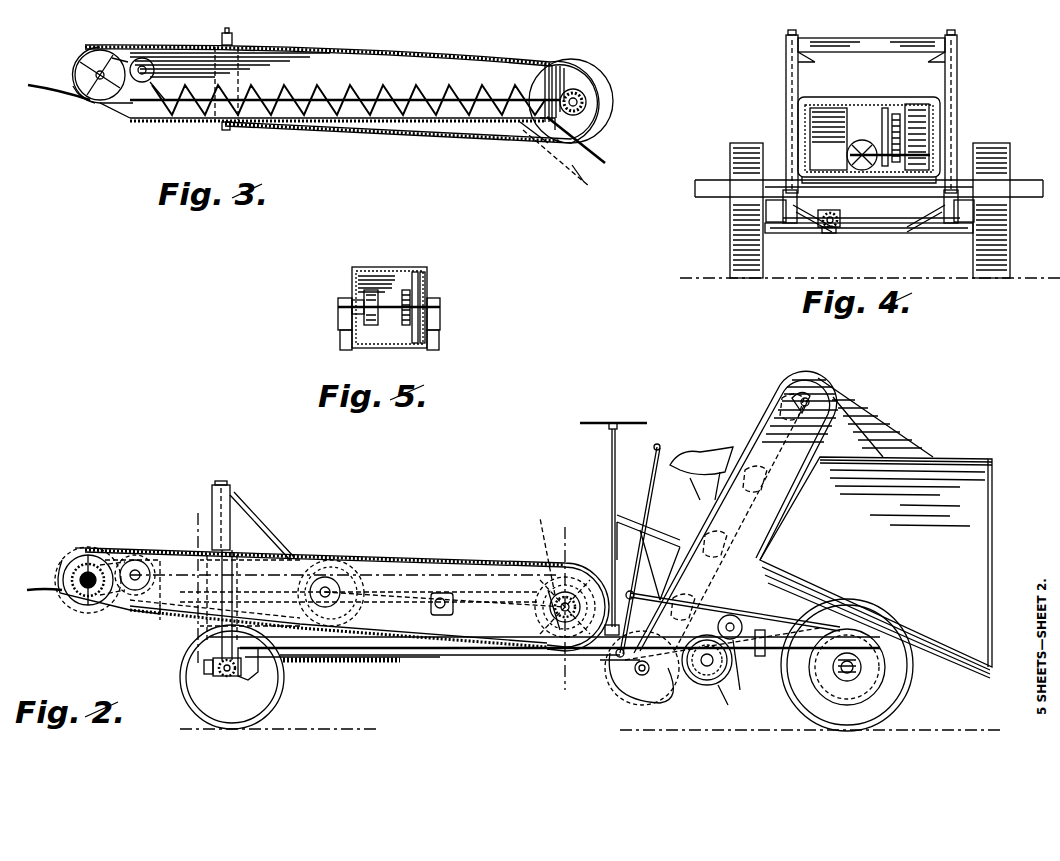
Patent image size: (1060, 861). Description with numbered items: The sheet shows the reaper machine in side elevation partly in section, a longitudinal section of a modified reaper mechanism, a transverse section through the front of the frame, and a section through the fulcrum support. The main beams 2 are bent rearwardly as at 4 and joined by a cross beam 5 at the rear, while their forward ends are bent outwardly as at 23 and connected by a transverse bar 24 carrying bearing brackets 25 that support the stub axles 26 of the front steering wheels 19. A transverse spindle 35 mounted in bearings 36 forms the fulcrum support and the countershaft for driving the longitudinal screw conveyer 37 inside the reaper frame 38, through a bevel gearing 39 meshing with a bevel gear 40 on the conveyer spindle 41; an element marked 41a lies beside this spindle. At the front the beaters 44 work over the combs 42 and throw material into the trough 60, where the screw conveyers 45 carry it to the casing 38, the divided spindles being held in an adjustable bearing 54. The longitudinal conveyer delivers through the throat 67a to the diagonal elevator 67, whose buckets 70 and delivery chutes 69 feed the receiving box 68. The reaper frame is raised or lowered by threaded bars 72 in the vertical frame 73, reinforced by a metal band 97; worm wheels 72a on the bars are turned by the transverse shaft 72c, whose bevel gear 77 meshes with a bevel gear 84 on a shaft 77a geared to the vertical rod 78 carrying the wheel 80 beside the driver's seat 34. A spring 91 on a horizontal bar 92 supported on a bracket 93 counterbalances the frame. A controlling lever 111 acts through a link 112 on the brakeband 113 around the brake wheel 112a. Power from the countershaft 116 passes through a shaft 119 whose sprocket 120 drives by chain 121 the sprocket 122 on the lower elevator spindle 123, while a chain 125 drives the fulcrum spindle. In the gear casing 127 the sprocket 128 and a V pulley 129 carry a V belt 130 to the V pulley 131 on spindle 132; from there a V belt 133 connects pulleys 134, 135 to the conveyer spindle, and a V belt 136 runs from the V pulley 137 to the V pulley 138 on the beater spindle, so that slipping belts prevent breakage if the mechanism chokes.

In FIG. 5, the main beams 2 is at (340, 350).
In FIG. 4, the main beams 2 is at (790, 195).
In FIG. 2, the rearwardly bent portion of main beams 4 is at (172, 590).
In FIG. 2, the cross beam 5 is at (576, 606).
In FIG. 4, the front steering wheels 19 is at (730, 250).
In FIG. 2, the front steering wheels 19 is at (283, 675).
In FIG. 4, the outwardly bent forward ends of frame members 23 is at (788, 225).
In FIG. 4, the transverse bar 24 is at (905, 234).
In FIG. 4, the bearing brackets 25 is at (955, 225).
In FIG. 4, the stub axles 26 is at (766, 213).
In FIG. 2, the driver's seat 34 is at (701, 464).
In FIG. 3, the transverse spindle 35 is at (590, 102).
In FIG. 5, the transverse spindle 35 is at (440, 305).
In FIG. 2, the transverse spindle 35 is at (558, 620).
In FIG. 5, the bearings 36 is at (340, 322).
In FIG. 3, the longitudinal screw conveyer 37 is at (410, 120).
In FIG. 4, the longitudinal screw conveyer 37 is at (805, 140).
In FIG. 2, the longitudinal screw conveyer 37 is at (478, 568).
In FIG. 3, the reaper frame 38 is at (468, 58).
In FIG. 5, the reaper frame 38 is at (378, 268).
In FIG. 4, the reaper frame 38 is at (880, 100).
In FIG. 2, the reaper frame 38 is at (410, 562).
In FIG. 3, the bevel gearing 39 is at (585, 90).
In FIG. 5, the bevel gearing 39 is at (352, 290).
In FIG. 2, the bevel gearing 39 is at (575, 580).
In FIG. 3, the bevel gear 40 is at (552, 125).
In FIG. 2, the bevel gear 40 is at (548, 590).
In FIG. 3, the conveyer spindle 41 is at (335, 122).
In FIG. 2, the auger casing 41a is at (140, 614).
In FIG. 3, the combs 42 is at (50, 95).
In FIG. 2, the combs 42 is at (60, 592).
In FIG. 3, the beaters 44 is at (80, 98).
In FIG. 3, the screw conveyers 45 is at (110, 105).
In FIG. 2, the adjustable bearing 54 is at (86, 590).
In FIG. 3, the trough 60 is at (146, 60).
In FIG. 2, the trough 60 is at (137, 558).
In FIG. 2, the elevator 67 is at (768, 420).
In FIG. 3, the throat 67a is at (556, 169).
In FIG. 2, the throat 67a is at (620, 660).
In FIG. 2, the receiving box 68 is at (876, 567).
In FIG. 2, the delivery chutes 69 is at (880, 430).
In FIG. 2, the buckets 70 is at (700, 515).
In FIG. 4, the threaded bar 72 is at (786, 85).
In FIG. 2, the threaded bar 72 is at (235, 545).
In FIG. 4, the worm wheels 72a is at (820, 228).
In FIG. 2, the worm wheels 72a is at (206, 668).
In FIG. 4, the transverse shaft 72c is at (868, 227).
In FIG. 2, the transverse shaft 72c is at (229, 677).
In FIG. 4, the vertical frame 73 is at (800, 84).
In FIG. 2, the vertical frame 73 is at (240, 512).
In FIG. 4, the bevel gear 77 is at (830, 225).
In FIG. 2, the shaft 77a is at (470, 656).
In FIG. 2, the vertical rod 78 is at (611, 478).
In FIG. 2, the wheel 80 is at (605, 422).
In FIG. 4, the bevel gear 84 is at (838, 220).
In FIG. 2, the spring 91 is at (345, 662).
In FIG. 2, the horizontal bar 92 is at (253, 678).
In FIG. 2, the bracket 93 is at (380, 664).
In FIG. 3, the metal band 97 is at (227, 130).
In FIG. 2, the controlling lever 111 is at (650, 476).
In FIG. 2, the link 112 is at (722, 680).
In FIG. 2, the brake wheel 112a is at (883, 690).
In FIG. 2, the brakeband 113 is at (834, 680).
In FIG. 2, the countershaft 116 is at (726, 706).
In FIG. 2, the shaft 119 is at (740, 690).
In FIG. 2, the sprocket 120 is at (736, 618).
In FIG. 2, the chain 121 is at (655, 703).
In FIG. 2, the sprocket 122 is at (638, 675).
In FIG. 2, the lower elevator spindle 123 is at (615, 665).
In FIG. 2, the chain 125 is at (707, 685).
In FIG. 5, the gear casing 127 is at (420, 280).
In FIG. 5, the sprocket 128 is at (408, 290).
In FIG. 2, the sprocket 128 is at (556, 640).
In FIG. 5, the V pulley 129 is at (425, 290).
In FIG. 2, the V pulley 129 is at (545, 546).
In FIG. 2, the V belt 130 is at (442, 593).
In FIG. 4, the V pulley 131 is at (905, 112).
In FIG. 2, the V pulley 131 is at (355, 560).
In FIG. 4, the spindle 132 is at (903, 136).
In FIG. 2, the spindle 132 is at (325, 577).
In FIG. 2, the V belt 133 is at (315, 550).
In FIG. 4, the pulley 134 is at (895, 127).
In FIG. 2, the pulley 134 is at (88, 556).
In FIG. 2, the pulley 135 is at (150, 555).
In FIG. 2, the V belt 136 is at (292, 548).
In FIG. 4, the V pulley 137 is at (912, 152).
In FIG. 2, the V pulley 137 is at (332, 548).
In FIG. 2, the V pulley 138 is at (108, 550).